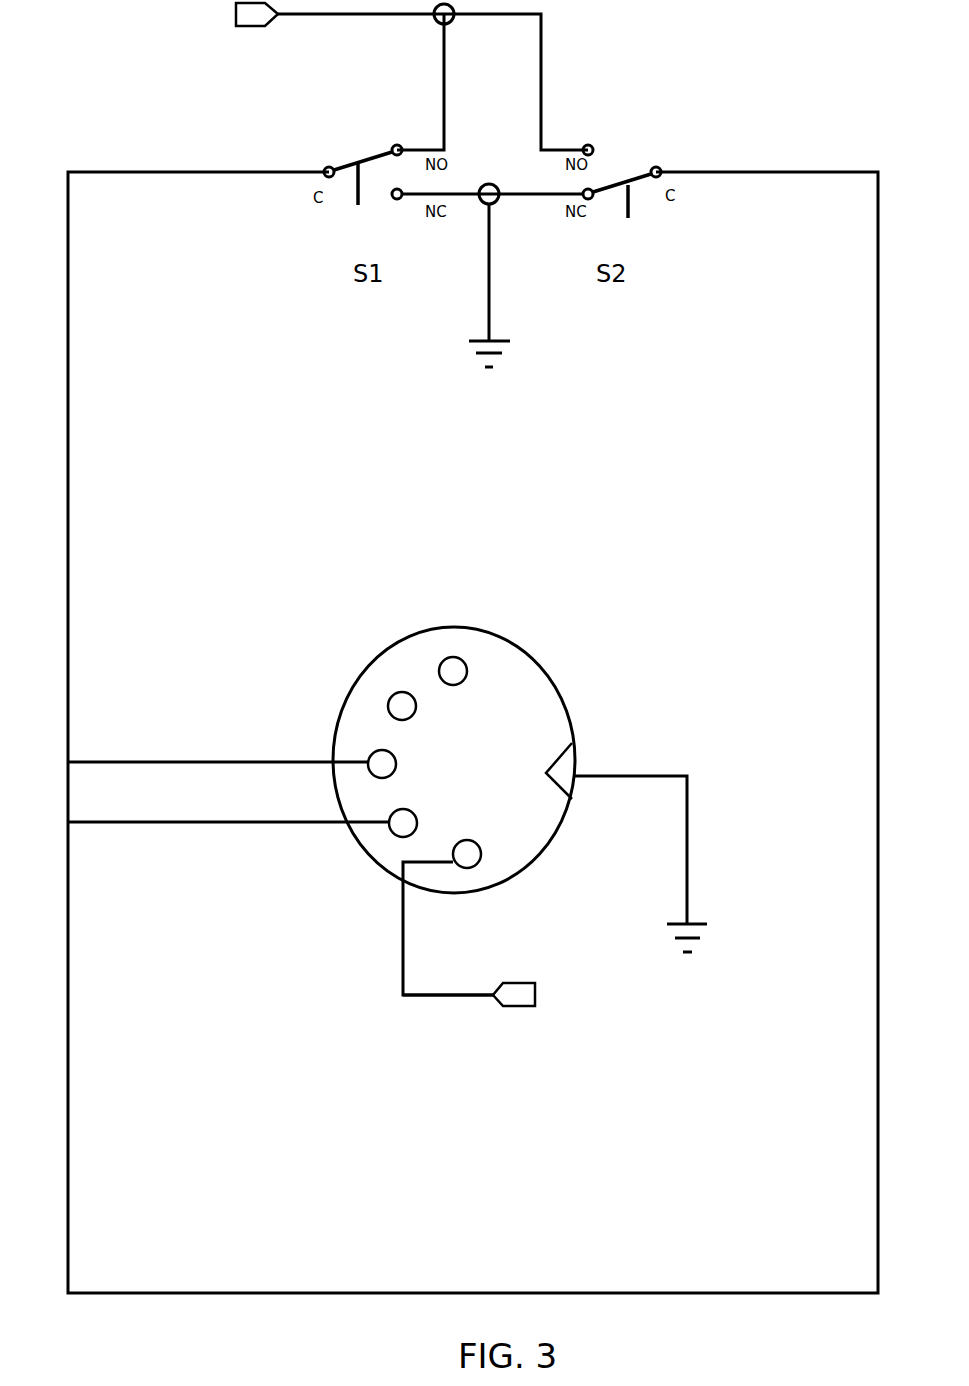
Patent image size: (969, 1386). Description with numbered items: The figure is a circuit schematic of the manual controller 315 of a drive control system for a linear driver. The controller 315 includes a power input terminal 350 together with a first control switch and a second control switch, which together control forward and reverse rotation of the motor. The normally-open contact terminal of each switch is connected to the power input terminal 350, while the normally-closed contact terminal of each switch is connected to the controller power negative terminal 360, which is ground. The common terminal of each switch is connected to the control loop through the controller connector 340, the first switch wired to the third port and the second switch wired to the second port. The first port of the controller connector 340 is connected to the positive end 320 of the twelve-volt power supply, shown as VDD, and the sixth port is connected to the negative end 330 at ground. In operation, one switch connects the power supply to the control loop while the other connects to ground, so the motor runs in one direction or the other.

The controller 315 is at (713, 110).
The positive end 320 is at (482, 1013).
The negative end 330 is at (673, 968).
The controller connector 340 is at (403, 624).
The power input terminal 350 is at (428, 26).
The controller power negative terminal 360 is at (503, 348).